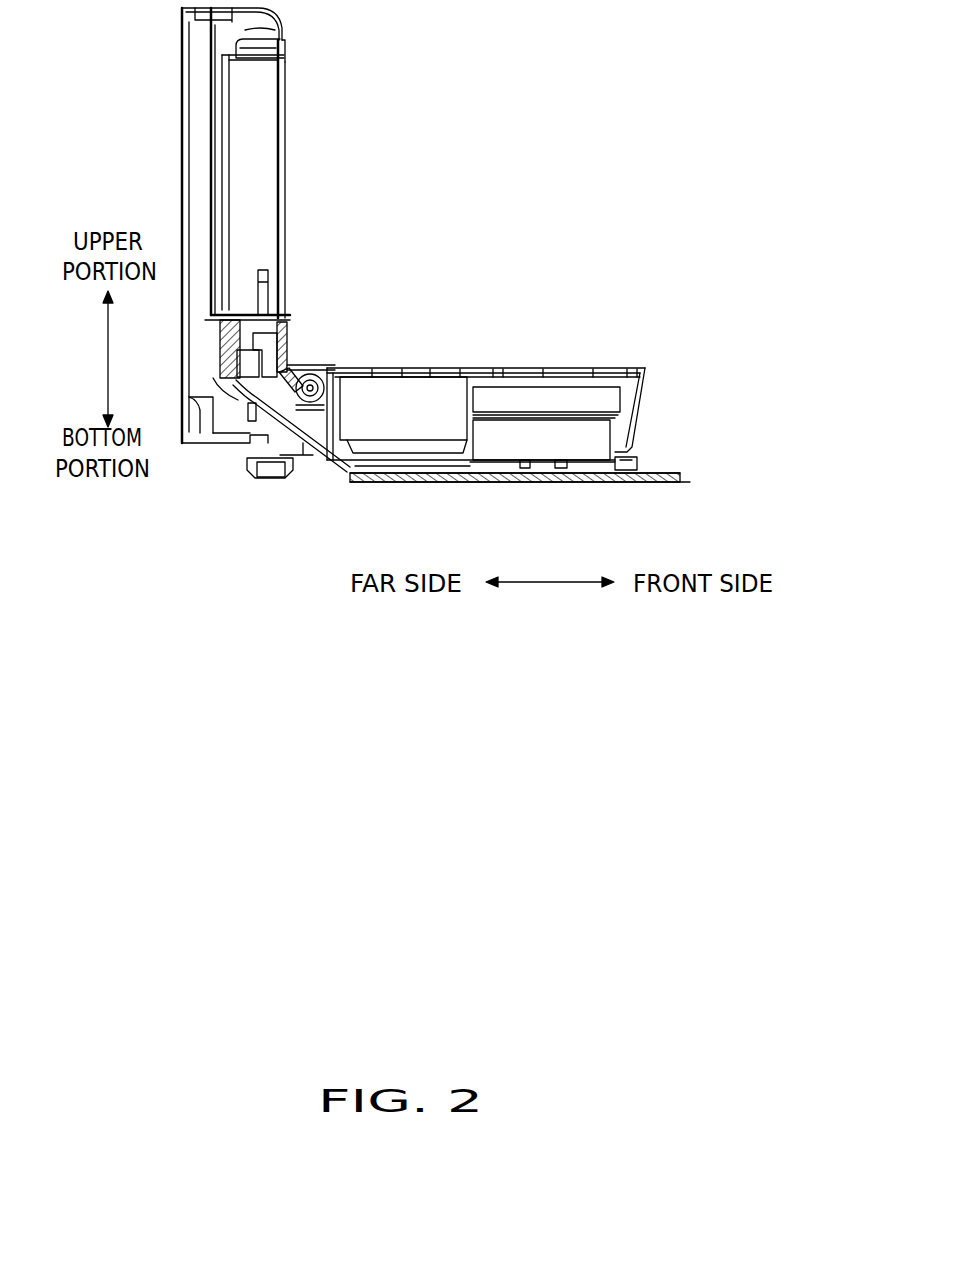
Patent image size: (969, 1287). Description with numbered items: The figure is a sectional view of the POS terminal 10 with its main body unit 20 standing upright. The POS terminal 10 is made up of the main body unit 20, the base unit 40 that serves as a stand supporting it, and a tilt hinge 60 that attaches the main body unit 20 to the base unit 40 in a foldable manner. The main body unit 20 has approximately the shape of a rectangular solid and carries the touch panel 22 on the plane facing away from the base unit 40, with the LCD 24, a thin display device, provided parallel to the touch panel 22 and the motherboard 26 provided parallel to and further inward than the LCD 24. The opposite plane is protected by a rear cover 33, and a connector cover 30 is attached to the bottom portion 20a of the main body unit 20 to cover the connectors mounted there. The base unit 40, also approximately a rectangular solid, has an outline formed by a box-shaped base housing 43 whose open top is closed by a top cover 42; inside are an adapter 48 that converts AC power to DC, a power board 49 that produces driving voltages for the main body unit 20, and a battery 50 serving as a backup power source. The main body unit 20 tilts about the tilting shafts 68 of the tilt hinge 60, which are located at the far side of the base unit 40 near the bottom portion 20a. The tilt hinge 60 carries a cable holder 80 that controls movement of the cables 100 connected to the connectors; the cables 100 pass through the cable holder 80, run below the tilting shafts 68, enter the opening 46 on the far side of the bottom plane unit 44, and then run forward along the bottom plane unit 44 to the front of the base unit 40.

The POS terminal 10 is at (548, 134).
The main body unit 20 is at (170, 103).
The bottom portion of the main body unit 20a is at (238, 446).
The touch panel 22 is at (190, 180).
The LCD 24 is at (200, 226).
The motherboard 26 is at (226, 100).
The connector cover 30 is at (312, 360).
The rear cover 33 is at (286, 170).
The base unit 40 is at (566, 338).
The top cover 42 is at (495, 366).
The base housing 43 is at (630, 424).
The bottom plane unit 44 is at (448, 470).
The opening 46 is at (320, 478).
The adapter 48 is at (404, 405).
The power board 49 is at (608, 393).
The battery 50 is at (558, 446).
The tilt hinge 60 is at (291, 358).
The tilting shafts 68 is at (345, 368).
The cable holder 80 is at (268, 360).
The cables 100 is at (385, 478).